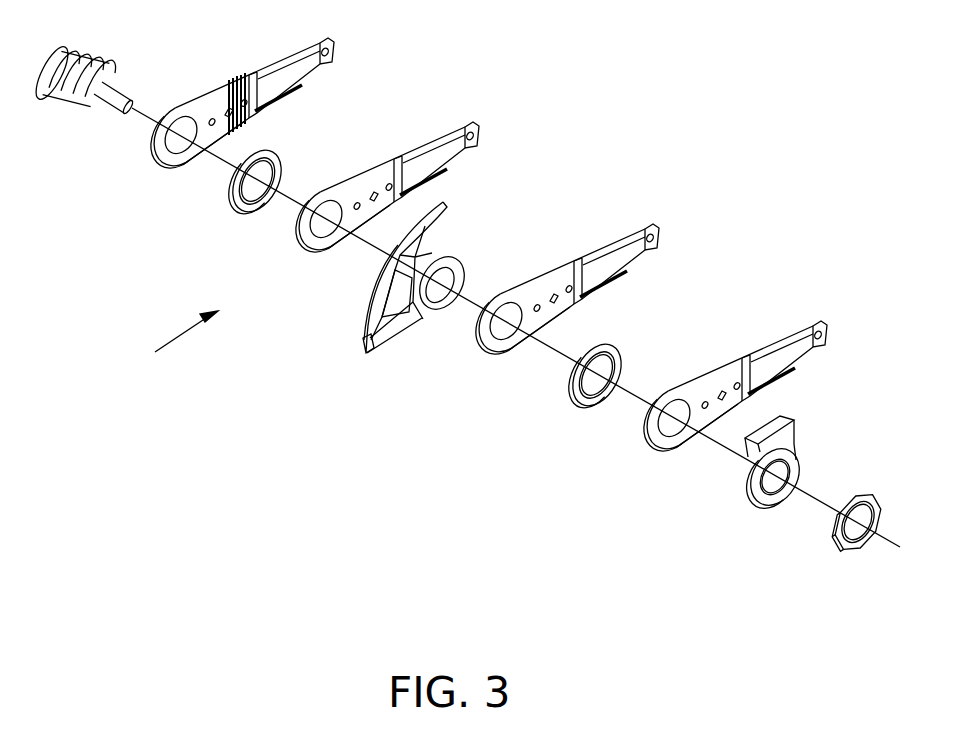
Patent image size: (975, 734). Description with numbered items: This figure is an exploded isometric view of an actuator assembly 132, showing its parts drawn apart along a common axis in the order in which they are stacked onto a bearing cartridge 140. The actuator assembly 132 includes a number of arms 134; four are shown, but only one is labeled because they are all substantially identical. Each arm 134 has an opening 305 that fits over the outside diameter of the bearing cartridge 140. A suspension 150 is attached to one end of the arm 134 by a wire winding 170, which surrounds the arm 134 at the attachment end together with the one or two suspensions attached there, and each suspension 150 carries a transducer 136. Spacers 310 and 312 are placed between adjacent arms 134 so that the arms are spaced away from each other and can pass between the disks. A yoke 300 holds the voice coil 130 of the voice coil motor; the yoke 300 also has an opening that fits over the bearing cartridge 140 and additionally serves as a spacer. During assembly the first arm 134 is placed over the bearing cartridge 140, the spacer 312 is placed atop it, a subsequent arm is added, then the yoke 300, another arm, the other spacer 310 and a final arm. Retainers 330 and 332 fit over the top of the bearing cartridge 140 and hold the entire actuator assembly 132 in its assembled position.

The voice coil 130 is at (364, 335).
The actuator assembly 132 is at (161, 345).
The arm 134 is at (235, 104).
The transducer 136 is at (366, 46).
The bearing cartridge 140 is at (72, 104).
The suspension 150 is at (266, 66).
The wire winding 170 is at (287, 112).
The yoke 300 is at (432, 304).
The opening 305 is at (174, 170).
The spacer 310 is at (593, 408).
The spacer 312 is at (243, 213).
The retainer 330 is at (773, 507).
The retainer 332 is at (850, 552).